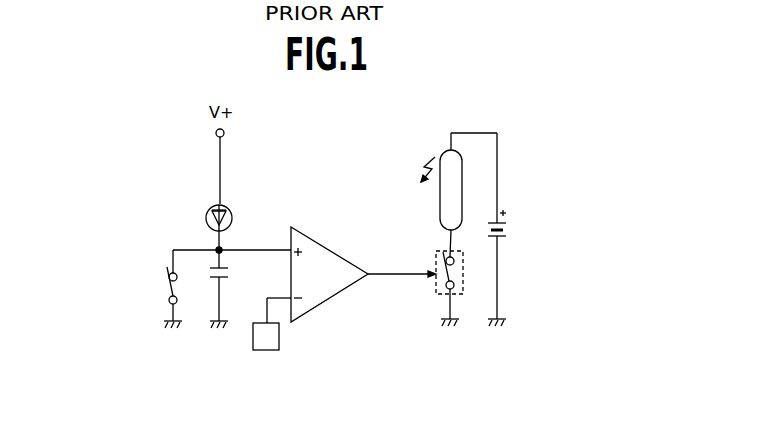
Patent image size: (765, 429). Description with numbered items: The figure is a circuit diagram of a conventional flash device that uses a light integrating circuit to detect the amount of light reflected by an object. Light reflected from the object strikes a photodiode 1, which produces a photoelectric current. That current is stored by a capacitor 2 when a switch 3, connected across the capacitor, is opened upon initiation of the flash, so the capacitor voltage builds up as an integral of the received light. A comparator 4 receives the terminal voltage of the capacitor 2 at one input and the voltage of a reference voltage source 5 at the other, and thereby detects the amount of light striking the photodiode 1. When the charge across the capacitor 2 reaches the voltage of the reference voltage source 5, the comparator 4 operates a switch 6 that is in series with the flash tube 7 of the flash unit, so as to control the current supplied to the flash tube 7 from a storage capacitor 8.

The photodiode 1 is at (228, 206).
The capacitor 2 is at (232, 273).
The switch 3 is at (167, 275).
The comparator 4 is at (328, 256).
The reference voltage source 5 is at (279, 335).
The switch 6 is at (436, 262).
The flash tube 7 is at (440, 197).
The storage capacitor 8 is at (510, 232).